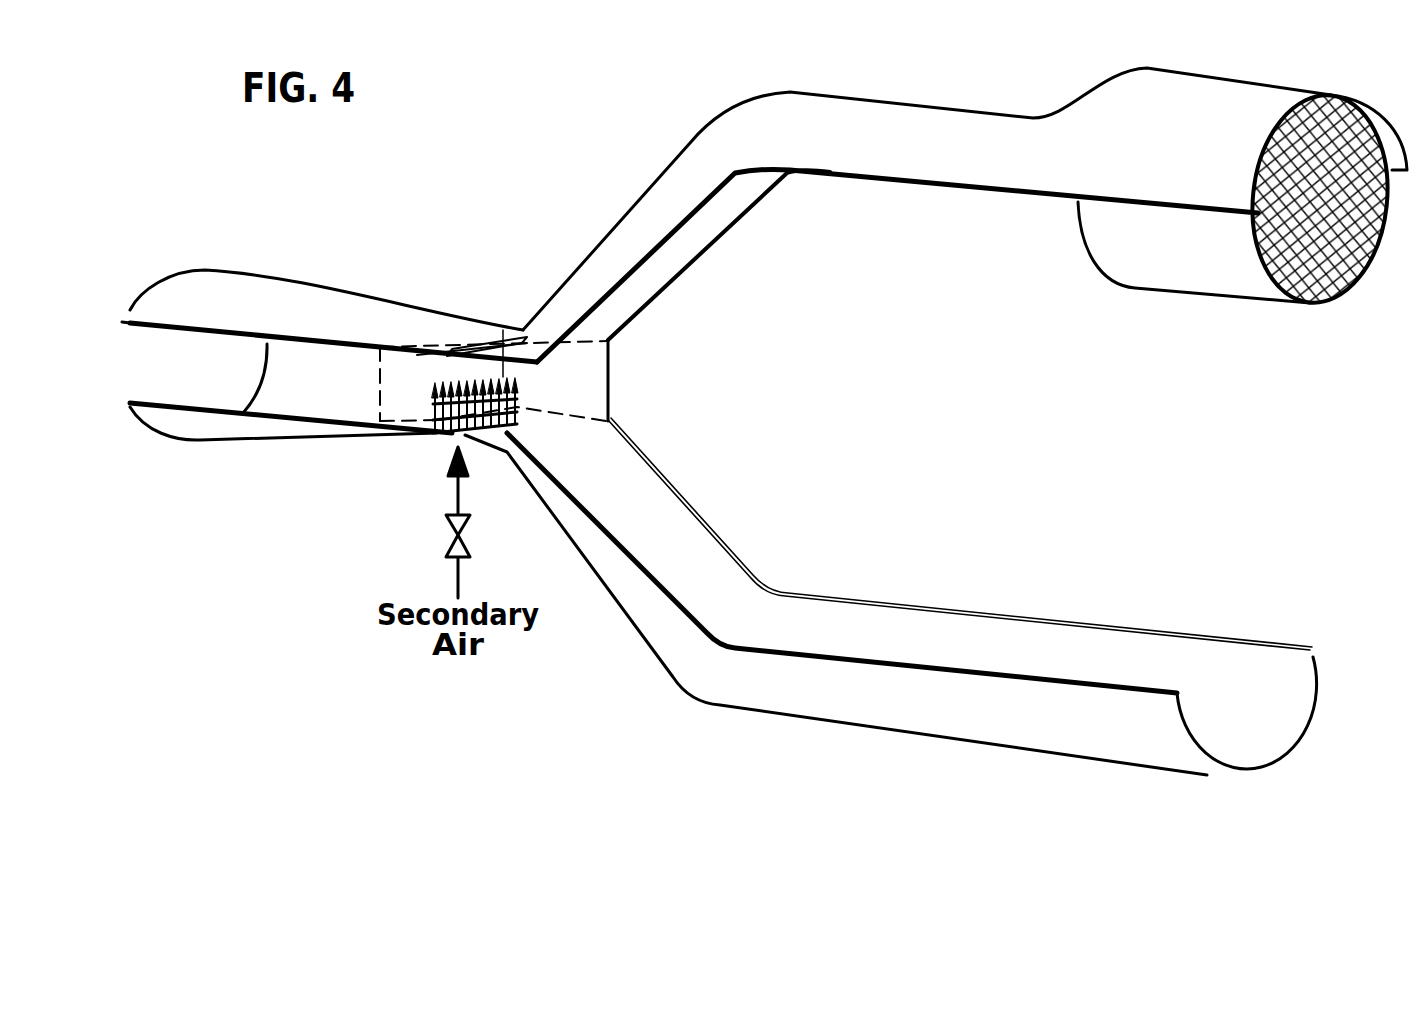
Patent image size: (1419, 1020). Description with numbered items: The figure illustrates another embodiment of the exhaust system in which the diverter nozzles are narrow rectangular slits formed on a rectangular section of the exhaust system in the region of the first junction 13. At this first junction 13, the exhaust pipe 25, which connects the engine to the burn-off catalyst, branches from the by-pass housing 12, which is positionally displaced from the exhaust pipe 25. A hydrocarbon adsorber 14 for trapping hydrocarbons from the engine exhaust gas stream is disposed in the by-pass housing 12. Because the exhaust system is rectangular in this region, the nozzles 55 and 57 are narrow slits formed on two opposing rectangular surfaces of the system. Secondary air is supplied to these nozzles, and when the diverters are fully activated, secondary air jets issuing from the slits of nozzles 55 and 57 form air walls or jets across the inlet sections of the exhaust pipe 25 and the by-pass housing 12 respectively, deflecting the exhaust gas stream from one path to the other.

The by-pass housing 12 is at (905, 108).
The first junction 13 is at (518, 318).
The hydrocarbon adsorber 14 is at (1340, 293).
The exhaust pipe 25 is at (953, 727).
The nozzle 55 is at (478, 343).
The nozzle 57 is at (450, 435).